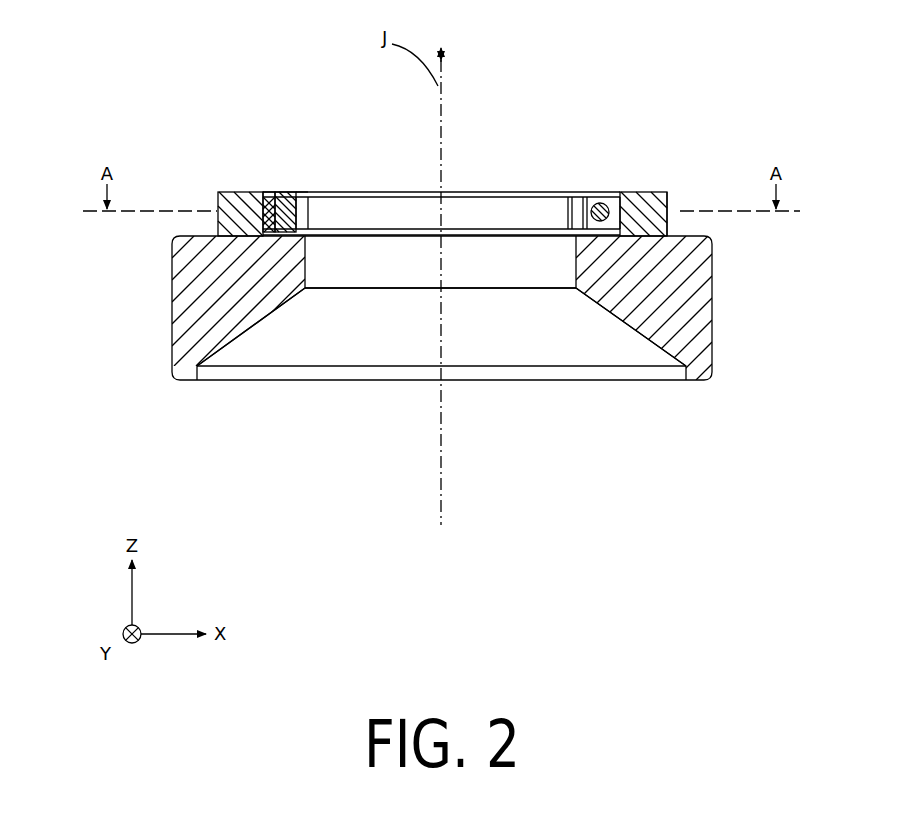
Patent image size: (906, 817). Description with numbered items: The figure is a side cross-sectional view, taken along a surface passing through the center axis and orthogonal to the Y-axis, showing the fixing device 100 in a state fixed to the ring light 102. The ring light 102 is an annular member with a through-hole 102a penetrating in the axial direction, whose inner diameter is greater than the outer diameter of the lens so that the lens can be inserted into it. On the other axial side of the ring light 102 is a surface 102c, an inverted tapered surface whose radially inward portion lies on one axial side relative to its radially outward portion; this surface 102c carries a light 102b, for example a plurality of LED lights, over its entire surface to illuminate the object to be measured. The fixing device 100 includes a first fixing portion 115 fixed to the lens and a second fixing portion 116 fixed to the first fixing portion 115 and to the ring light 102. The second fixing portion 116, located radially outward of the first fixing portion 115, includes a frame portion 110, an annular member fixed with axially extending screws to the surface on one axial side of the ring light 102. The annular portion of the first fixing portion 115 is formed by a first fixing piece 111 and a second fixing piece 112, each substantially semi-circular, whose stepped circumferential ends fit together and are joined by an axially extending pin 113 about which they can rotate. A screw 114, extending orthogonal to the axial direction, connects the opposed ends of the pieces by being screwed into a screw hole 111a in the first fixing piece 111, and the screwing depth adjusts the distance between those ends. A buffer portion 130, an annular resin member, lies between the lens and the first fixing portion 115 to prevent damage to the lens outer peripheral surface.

The fixing device 100 is at (677, 191).
The ring light 102 is at (676, 302).
The through-hole 102a is at (362, 262).
The light 102b is at (528, 345).
The surface 102c is at (302, 345).
The frame portion 110 is at (217, 217).
The first fixing piece 111 is at (262, 228).
The screw hole 111a is at (601, 203).
The second fixing piece 112 is at (266, 191).
The pin 113 is at (285, 190).
The screw 114 is at (615, 197).
The first fixing portion 115 is at (294, 184).
The second fixing portion 116 is at (662, 178).
The buffer portion 130 is at (375, 210).